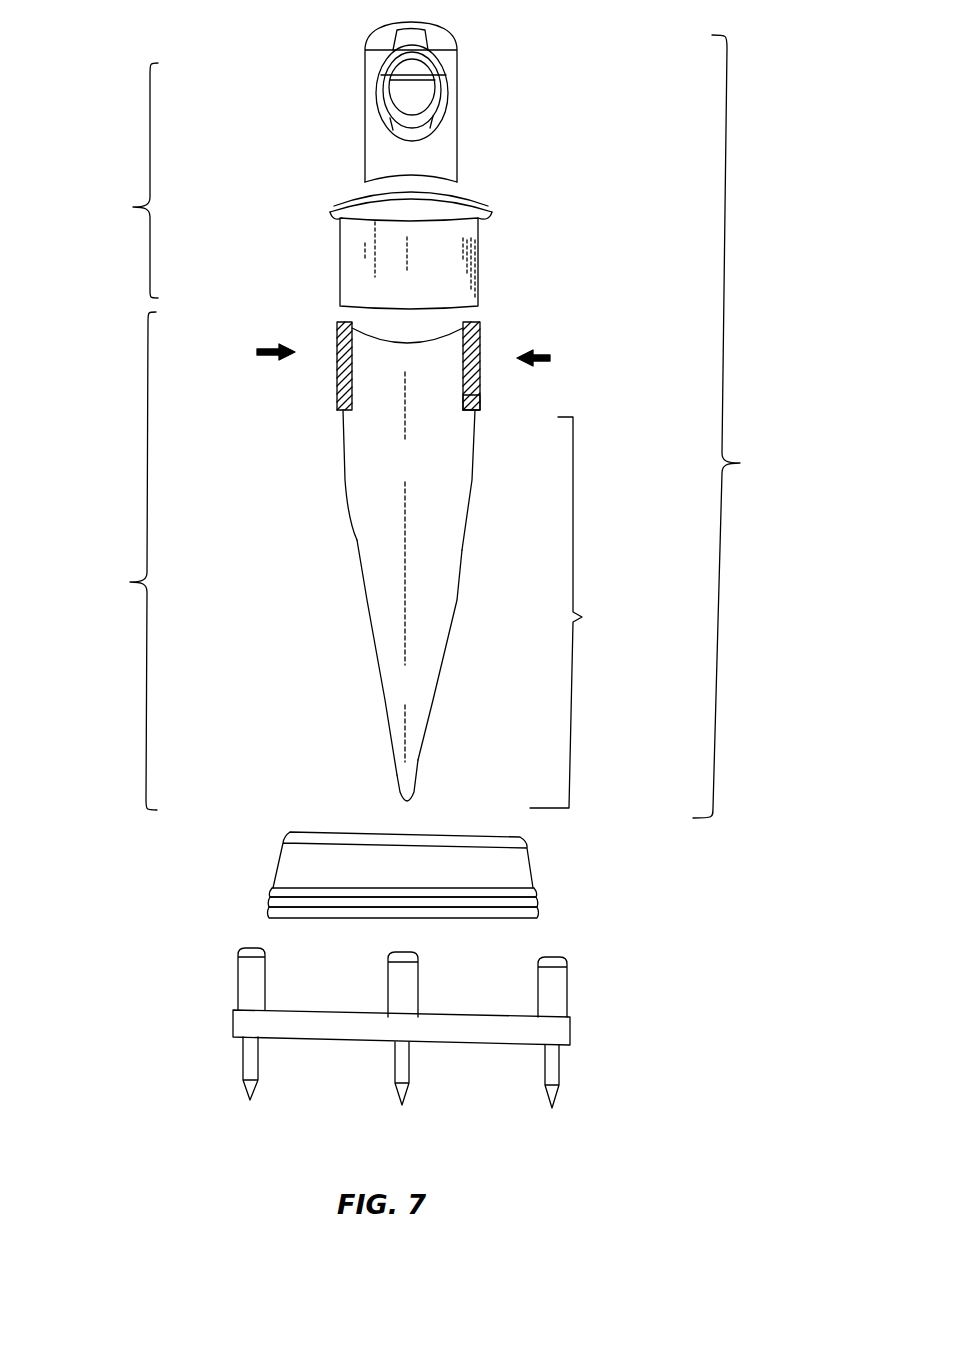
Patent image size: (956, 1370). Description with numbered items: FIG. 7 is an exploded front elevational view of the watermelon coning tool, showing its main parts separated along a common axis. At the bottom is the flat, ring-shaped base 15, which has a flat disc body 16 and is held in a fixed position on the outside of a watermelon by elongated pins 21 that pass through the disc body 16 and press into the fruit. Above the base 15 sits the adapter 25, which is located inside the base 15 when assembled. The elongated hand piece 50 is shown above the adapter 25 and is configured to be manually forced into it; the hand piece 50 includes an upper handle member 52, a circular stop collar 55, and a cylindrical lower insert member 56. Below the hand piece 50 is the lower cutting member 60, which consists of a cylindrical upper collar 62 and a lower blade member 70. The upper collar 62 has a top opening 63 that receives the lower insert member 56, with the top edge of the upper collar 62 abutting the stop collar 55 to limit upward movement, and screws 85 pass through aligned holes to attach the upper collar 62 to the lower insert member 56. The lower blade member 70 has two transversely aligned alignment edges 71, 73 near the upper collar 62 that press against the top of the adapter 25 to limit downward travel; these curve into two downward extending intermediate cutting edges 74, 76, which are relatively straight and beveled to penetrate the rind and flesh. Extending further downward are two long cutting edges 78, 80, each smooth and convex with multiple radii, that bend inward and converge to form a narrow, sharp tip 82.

The base 15 is at (358, 1031).
The disc body 16 is at (570, 1028).
The pin 21 is at (250, 1100).
The adapter 25 is at (290, 832).
The hand piece 50 is at (447, 426).
The upper handle member 52 is at (460, 105).
The stop collar 55 is at (490, 210).
The lower insert member 56 is at (340, 260).
The lower cutting member 60 is at (121, 561).
The upper collar 62 is at (480, 337).
The top opening 63 is at (398, 337).
The lower blade member 70 is at (442, 590).
The alignment edge 71 is at (338, 410).
The alignment edge 73 is at (483, 424).
The intermediate cutting edge 74 is at (340, 440).
The intermediate cutting edge 76 is at (478, 456).
The long cutting edge 78 is at (358, 578).
The long cutting edge 80 is at (445, 593).
The tip 82 is at (400, 798).
The screw 85 is at (257, 352).